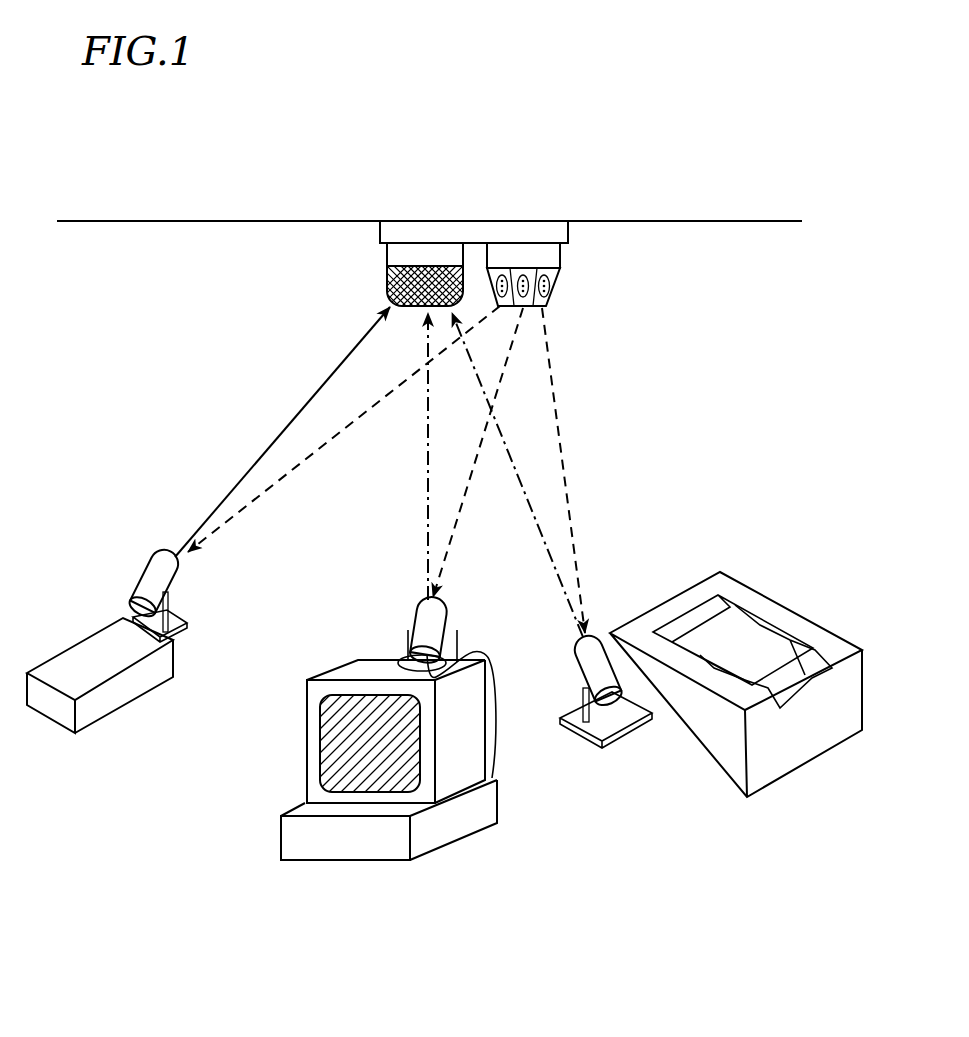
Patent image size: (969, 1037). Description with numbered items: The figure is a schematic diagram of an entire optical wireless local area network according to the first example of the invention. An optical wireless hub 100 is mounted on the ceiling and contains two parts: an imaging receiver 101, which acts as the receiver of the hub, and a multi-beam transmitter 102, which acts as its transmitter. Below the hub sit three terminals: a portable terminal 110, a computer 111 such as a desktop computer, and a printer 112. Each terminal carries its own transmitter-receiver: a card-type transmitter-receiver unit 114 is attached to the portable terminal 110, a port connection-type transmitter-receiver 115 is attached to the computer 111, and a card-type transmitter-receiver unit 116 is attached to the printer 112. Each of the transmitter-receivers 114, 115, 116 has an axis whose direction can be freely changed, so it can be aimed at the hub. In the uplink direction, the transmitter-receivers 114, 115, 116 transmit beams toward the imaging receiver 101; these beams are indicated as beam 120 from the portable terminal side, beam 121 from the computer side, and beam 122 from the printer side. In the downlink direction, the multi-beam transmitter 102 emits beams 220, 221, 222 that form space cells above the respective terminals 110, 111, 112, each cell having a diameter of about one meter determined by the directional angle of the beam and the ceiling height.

The optical wireless hub 100 is at (592, 235).
The imaging receiver 101 is at (385, 275).
The multi-beam transmitter 102 is at (562, 272).
The portable terminal 110 is at (92, 662).
The computer 111 is at (348, 840).
The printer 112 is at (785, 750).
The card-type transmitter-receiver unit 114 is at (162, 570).
The port connection-type transmitter-receiver 115 is at (420, 622).
The card-type transmitter-receiver unit 116 is at (597, 730).
The beam 120 is at (232, 492).
The beam 121 is at (427, 443).
The beam 122 is at (530, 508).
The beam 220 is at (290, 463).
The beam 221 is at (473, 480).
The beam 222 is at (577, 557).